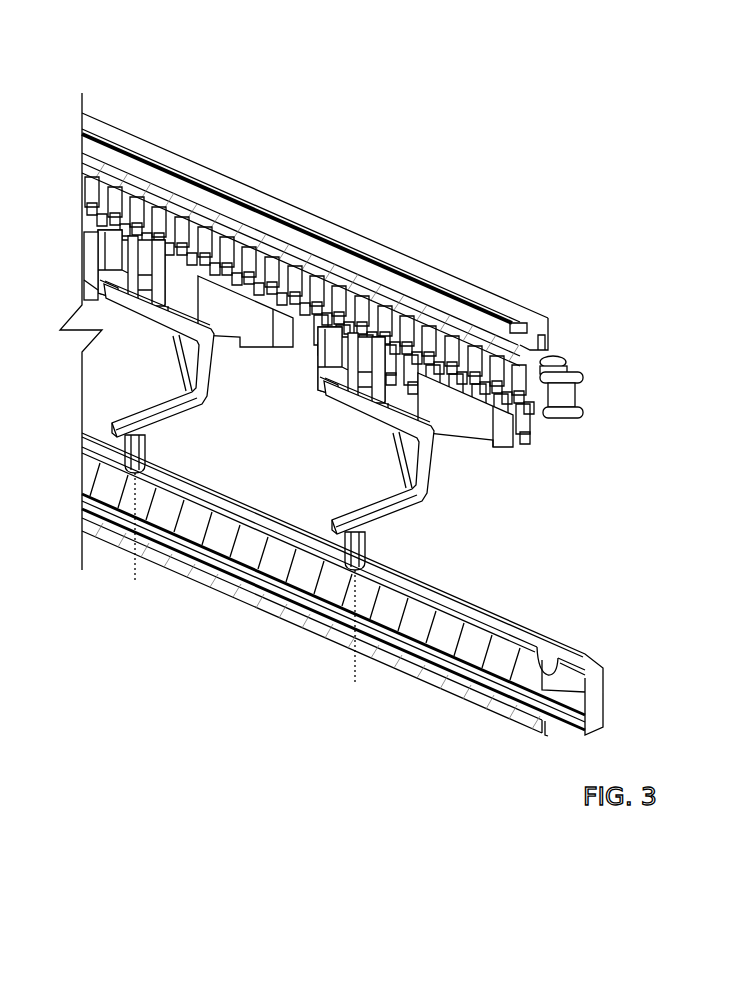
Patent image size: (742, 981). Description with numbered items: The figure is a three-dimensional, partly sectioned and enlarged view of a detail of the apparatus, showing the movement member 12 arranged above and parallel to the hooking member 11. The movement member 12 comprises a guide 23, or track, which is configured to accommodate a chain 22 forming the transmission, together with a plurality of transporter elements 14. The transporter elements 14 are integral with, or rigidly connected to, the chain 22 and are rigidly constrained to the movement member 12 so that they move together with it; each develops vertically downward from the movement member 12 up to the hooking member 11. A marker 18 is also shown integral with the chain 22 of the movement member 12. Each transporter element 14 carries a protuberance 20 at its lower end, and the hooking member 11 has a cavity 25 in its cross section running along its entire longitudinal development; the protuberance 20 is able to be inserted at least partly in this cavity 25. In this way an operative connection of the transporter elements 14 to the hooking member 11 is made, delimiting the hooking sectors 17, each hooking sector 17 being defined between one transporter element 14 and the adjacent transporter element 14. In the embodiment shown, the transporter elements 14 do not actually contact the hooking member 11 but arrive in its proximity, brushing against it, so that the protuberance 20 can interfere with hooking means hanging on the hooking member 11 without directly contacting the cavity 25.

The hooking member 11 is at (608, 697).
The movement member 12 is at (396, 236).
The transporter element 14 is at (191, 424).
The hooking sector 17 is at (350, 692).
The marker 18 is at (254, 326).
The protuberance 20 is at (141, 451).
The chain 22 is at (565, 398).
The guide 23 is at (478, 297).
The cavity 25 is at (558, 668).